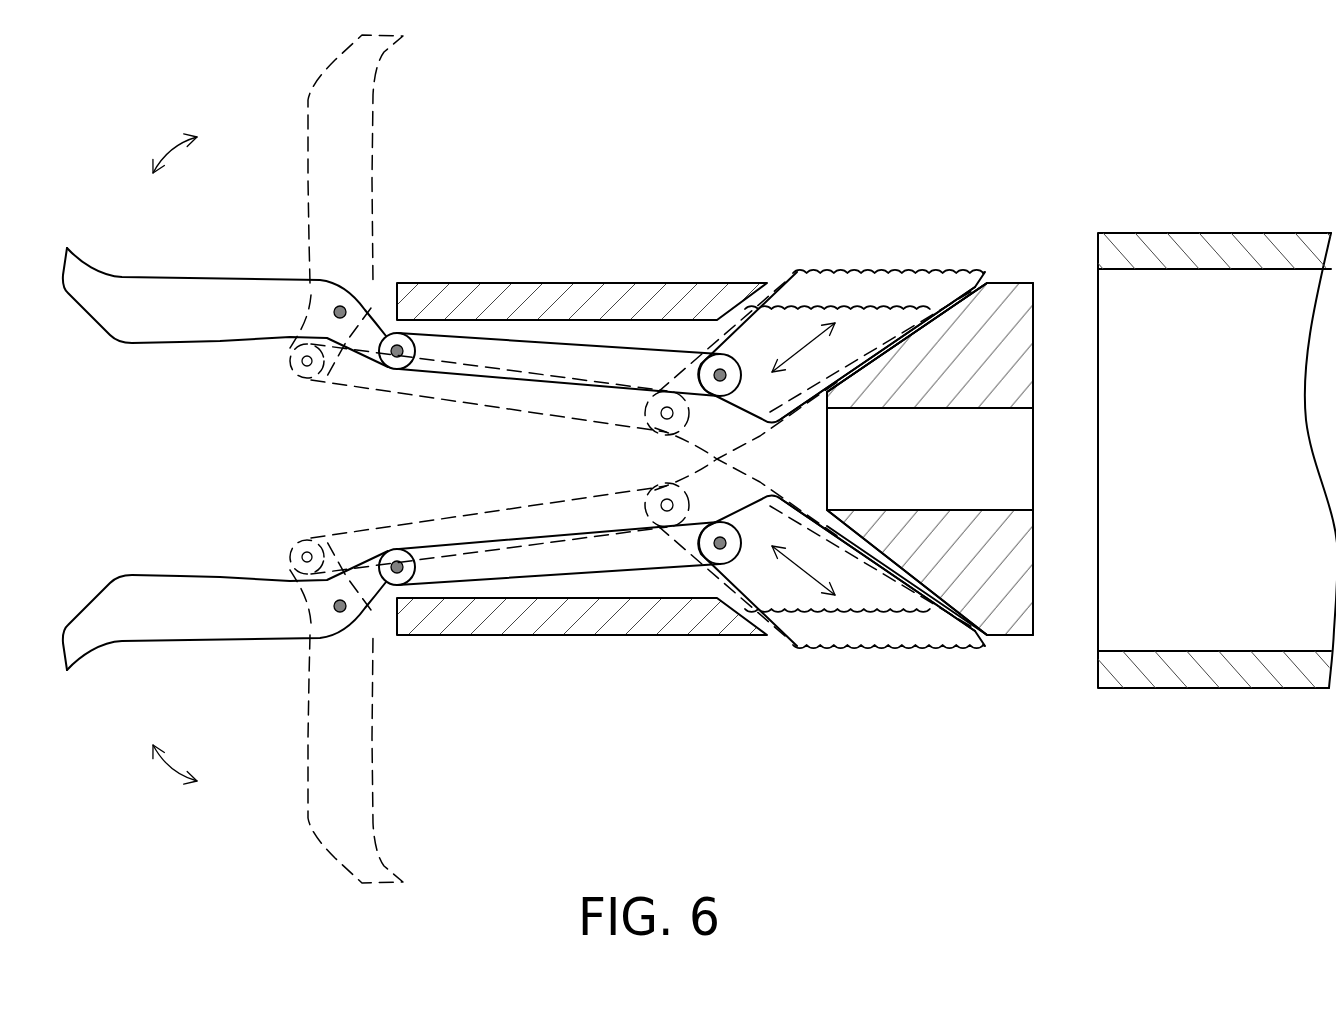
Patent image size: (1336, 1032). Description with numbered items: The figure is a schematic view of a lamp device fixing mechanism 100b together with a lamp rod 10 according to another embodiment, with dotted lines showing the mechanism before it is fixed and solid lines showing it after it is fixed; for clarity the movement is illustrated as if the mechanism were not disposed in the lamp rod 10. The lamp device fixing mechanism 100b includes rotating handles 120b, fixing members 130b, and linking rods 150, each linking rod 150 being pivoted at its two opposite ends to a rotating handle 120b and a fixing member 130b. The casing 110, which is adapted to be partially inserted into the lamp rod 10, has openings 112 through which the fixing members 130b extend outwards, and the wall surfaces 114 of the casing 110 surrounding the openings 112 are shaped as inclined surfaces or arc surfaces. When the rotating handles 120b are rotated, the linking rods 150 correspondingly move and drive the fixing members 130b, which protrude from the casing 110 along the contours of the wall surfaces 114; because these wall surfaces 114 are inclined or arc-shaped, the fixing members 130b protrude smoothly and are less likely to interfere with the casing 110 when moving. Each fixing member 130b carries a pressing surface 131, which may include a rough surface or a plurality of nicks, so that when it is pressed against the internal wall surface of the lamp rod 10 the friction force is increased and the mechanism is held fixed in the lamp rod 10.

The lamp device fixing mechanism 100b is at (983, 89).
The lamp rod 10 is at (1196, 248).
The casing 110 is at (652, 307).
The opening 112 is at (777, 275).
The wall surface 114 is at (967, 296).
The rotating handle 120b is at (181, 282).
The fixing member 130b is at (782, 340).
The pressing surface 131 is at (916, 268).
The linking rod 150 is at (556, 356).